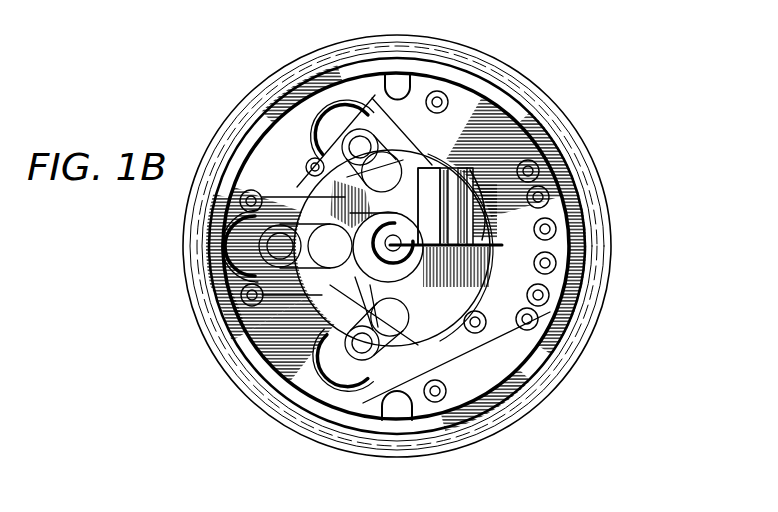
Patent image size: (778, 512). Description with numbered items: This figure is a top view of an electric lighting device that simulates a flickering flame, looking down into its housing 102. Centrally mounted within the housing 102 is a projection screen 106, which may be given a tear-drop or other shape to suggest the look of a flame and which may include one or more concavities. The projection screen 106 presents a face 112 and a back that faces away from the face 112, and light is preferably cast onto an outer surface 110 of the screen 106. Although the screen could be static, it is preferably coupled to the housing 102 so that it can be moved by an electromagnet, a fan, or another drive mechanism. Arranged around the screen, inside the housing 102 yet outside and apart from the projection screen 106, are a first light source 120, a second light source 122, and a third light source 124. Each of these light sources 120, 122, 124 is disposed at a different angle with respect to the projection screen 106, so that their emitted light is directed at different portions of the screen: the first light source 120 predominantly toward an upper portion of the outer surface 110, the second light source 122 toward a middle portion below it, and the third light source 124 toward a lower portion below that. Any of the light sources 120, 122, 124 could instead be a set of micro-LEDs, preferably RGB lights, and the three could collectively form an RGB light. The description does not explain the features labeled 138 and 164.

The housing 102 is at (229, 376).
The projection screen 106 is at (479, 222).
The outer surface 110 is at (452, 165).
The face 112 is at (447, 163).
The first light source 120 is at (330, 110).
The second light source 122 is at (238, 247).
The third light source 124 is at (330, 383).
The curved guide surface 138 is at (468, 183).
The cam disk 164 is at (488, 283).